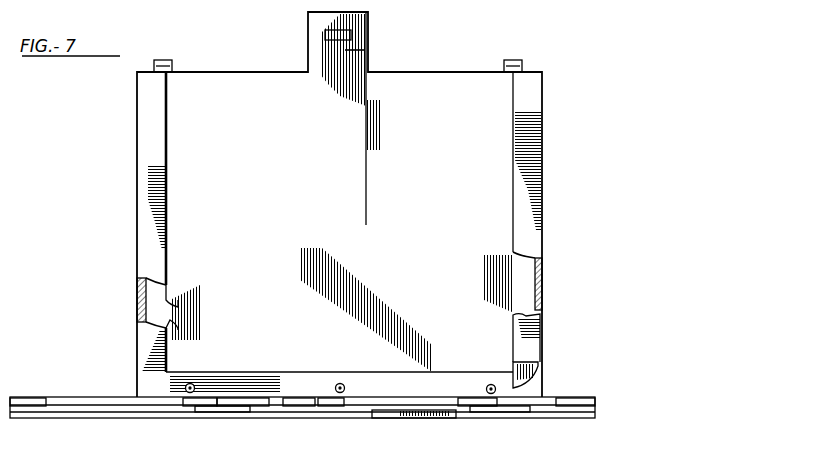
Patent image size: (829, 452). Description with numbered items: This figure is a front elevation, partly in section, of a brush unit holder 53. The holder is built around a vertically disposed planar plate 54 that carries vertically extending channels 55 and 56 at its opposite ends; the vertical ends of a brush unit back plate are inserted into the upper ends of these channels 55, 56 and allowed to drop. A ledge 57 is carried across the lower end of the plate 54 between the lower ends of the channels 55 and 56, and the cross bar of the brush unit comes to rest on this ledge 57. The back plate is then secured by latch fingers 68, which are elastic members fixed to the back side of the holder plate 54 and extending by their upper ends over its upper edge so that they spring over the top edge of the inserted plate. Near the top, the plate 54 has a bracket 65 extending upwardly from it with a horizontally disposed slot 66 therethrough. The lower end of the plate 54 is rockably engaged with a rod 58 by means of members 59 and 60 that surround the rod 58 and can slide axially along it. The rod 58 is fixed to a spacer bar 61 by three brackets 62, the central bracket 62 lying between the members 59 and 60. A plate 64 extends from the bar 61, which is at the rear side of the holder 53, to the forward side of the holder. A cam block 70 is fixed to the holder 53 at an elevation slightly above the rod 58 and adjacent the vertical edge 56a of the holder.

The brush unit holder 53 is at (449, 100).
The planar plate 54 is at (242, 105).
The channel 55 is at (155, 133).
The channel 56 is at (512, 175).
The vertical edge 56a is at (540, 333).
The ledge 57 is at (266, 366).
The rod 58 is at (92, 405).
The member 59 is at (197, 412).
The member 60 is at (474, 412).
The spacer bar 61 is at (126, 412).
The bracket 62 is at (32, 398).
The plate 64 is at (380, 412).
The bracket 65 is at (362, 51).
The slot 66 is at (346, 36).
The latch finger 68 is at (162, 64).
The cam block 70 is at (532, 370).